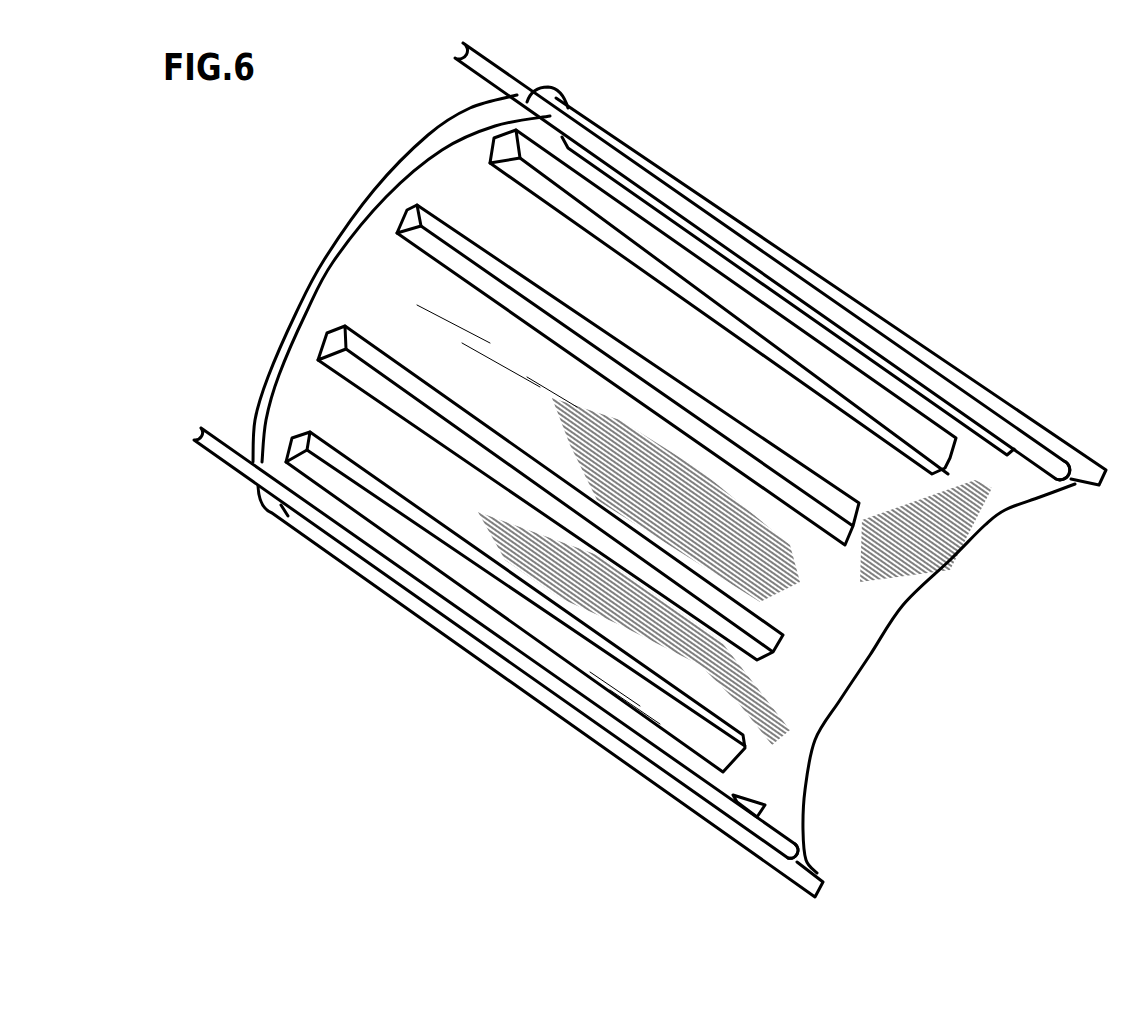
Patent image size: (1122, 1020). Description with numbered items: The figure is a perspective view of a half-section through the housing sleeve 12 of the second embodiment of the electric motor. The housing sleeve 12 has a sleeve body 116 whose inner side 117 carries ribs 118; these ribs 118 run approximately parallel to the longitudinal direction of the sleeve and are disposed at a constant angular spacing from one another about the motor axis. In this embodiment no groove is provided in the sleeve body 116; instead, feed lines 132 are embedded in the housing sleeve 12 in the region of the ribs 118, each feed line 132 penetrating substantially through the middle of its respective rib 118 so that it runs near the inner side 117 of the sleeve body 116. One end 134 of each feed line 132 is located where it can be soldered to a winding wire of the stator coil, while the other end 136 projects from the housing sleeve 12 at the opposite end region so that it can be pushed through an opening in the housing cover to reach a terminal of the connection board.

The housing sleeve 12 is at (482, 677).
The sleeve body 116 is at (878, 316).
The inner side 117 is at (370, 277).
The ribs 118 is at (752, 257).
The feed lines 132 is at (552, 117).
The end of the feed line 134 is at (1035, 462).
The another end of the feed line 136 is at (483, 63).